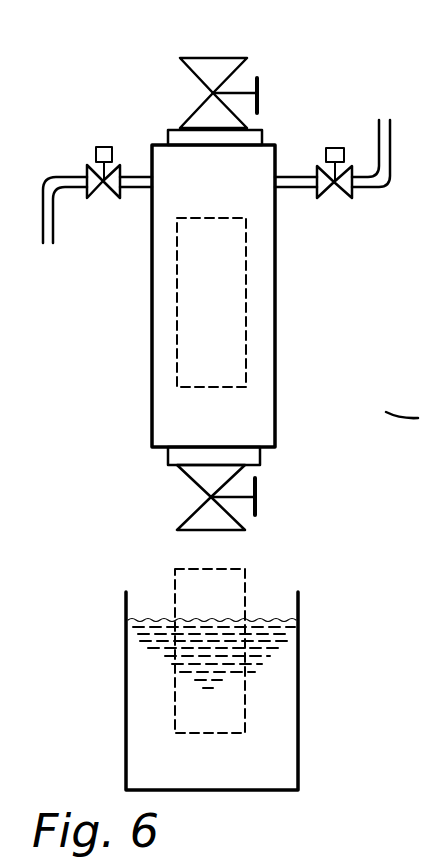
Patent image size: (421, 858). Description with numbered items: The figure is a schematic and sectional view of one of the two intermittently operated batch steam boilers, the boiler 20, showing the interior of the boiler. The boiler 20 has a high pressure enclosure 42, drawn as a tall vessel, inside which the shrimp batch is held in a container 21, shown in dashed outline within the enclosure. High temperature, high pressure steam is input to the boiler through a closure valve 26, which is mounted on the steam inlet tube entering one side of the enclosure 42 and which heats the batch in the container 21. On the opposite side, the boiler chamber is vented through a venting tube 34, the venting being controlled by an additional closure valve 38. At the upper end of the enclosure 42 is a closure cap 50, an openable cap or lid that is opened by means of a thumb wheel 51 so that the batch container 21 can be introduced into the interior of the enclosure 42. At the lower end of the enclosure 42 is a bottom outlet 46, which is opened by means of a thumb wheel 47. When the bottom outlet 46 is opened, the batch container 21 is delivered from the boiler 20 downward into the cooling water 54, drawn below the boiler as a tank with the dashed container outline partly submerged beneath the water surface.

The boiler 20 is at (143, 297).
The container 21 is at (232, 272).
The closure valve 26 is at (338, 148).
The venting tube 34 is at (50, 215).
The closure valve 38 is at (108, 147).
The high pressure enclosure 42 is at (275, 410).
The bottom outlet 46 is at (178, 452).
The thumb wheel 47 is at (258, 493).
The closure cap 50 is at (262, 133).
The thumb wheel 51 is at (264, 95).
The cooling water 54 is at (225, 660).